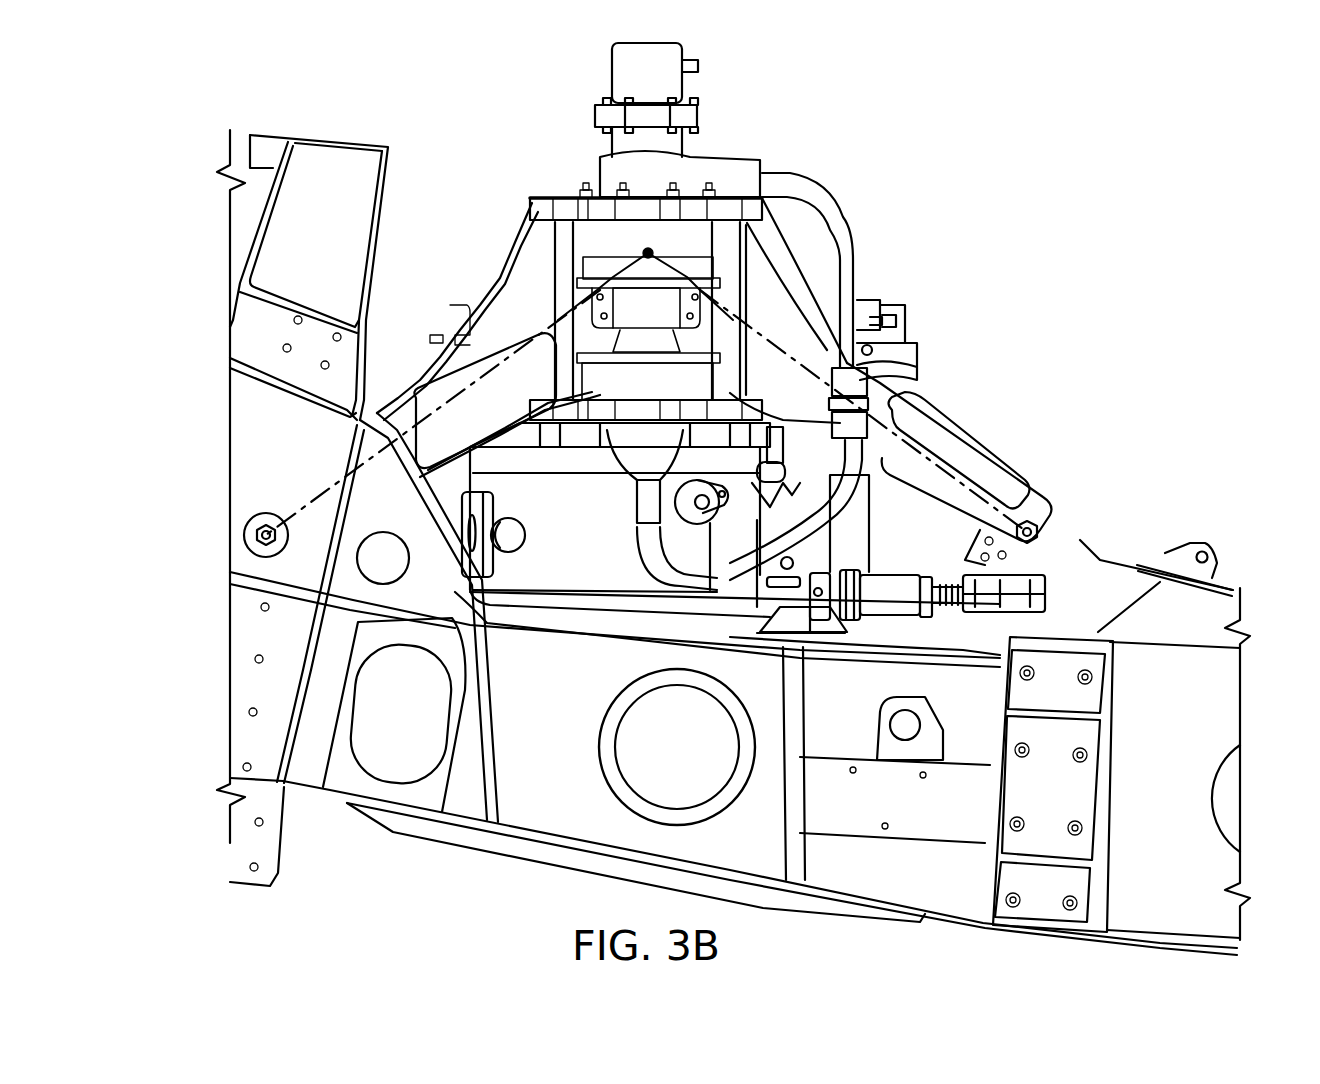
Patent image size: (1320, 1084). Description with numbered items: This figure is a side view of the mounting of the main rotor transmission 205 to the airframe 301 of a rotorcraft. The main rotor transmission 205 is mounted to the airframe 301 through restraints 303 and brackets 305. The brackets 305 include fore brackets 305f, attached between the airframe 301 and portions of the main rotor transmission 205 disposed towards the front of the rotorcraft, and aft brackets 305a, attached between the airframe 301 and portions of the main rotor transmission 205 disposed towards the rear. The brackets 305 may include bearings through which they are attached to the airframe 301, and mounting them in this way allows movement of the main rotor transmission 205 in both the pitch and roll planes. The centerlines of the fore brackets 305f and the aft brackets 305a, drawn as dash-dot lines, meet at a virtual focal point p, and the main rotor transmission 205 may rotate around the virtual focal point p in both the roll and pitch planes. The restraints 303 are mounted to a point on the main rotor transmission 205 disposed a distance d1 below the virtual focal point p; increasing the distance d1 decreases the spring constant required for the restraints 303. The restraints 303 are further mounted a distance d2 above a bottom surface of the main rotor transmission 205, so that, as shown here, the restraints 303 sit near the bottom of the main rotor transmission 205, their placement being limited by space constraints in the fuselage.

The airframe 301 is at (247, 683).
The brackets 305 is at (528, 207).
The fore brackets 305f is at (490, 283).
The aft brackets 305a is at (1000, 428).
The main rotor transmission 205 is at (873, 528).
The restraints 303 is at (872, 616).
The virtual focal point p is at (660, 240).
The distance d1 is at (1083, 258).
The distance d2 is at (727, 538).